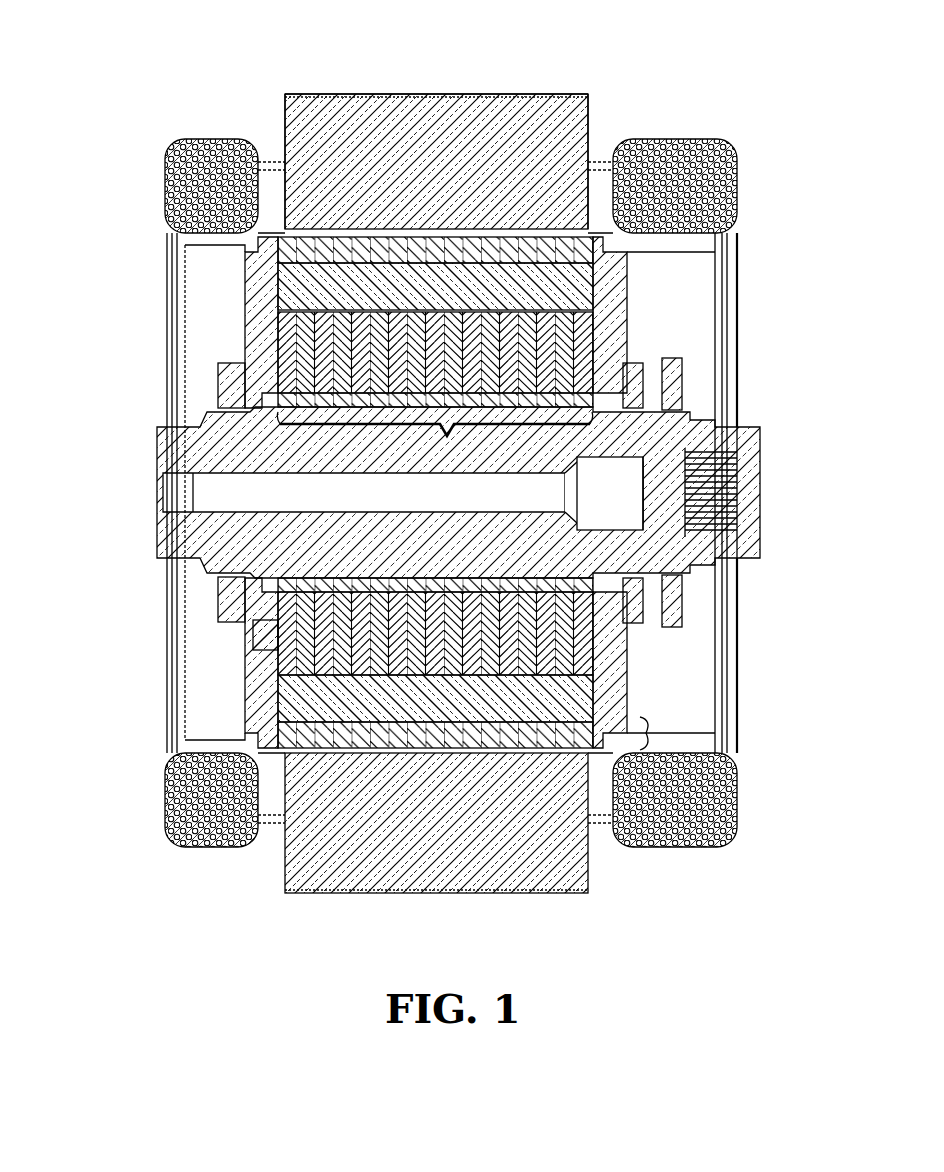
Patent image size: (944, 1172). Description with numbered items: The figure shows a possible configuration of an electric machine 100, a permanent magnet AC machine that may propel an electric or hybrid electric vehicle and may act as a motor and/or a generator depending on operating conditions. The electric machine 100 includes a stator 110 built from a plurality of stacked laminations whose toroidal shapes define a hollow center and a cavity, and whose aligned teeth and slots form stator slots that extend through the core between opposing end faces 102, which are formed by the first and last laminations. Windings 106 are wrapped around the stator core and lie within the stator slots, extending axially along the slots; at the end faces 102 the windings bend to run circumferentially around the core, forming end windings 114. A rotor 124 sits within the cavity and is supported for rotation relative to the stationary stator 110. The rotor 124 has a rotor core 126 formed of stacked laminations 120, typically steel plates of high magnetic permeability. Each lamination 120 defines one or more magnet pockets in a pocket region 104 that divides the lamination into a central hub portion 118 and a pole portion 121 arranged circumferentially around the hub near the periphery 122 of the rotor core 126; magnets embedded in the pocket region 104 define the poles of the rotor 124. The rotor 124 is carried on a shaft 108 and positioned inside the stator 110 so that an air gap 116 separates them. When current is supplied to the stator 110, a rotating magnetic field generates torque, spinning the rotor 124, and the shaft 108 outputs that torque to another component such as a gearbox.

The electric machine 100 is at (240, 50).
The end faces 102 is at (285, 138).
The pocket region 104 is at (540, 290).
The windings 106 is at (435, 125).
The shaft 108 is at (750, 428).
The stator 110 is at (468, 94).
The end windings 114 is at (733, 140).
The air gap 116 is at (590, 748).
The central hub portion 118 is at (630, 633).
The laminations 120 is at (240, 612).
The pole portion 121 is at (655, 740).
The periphery 122 is at (297, 745).
The rotor 124 is at (222, 328).
The rotor core 126 is at (462, 440).